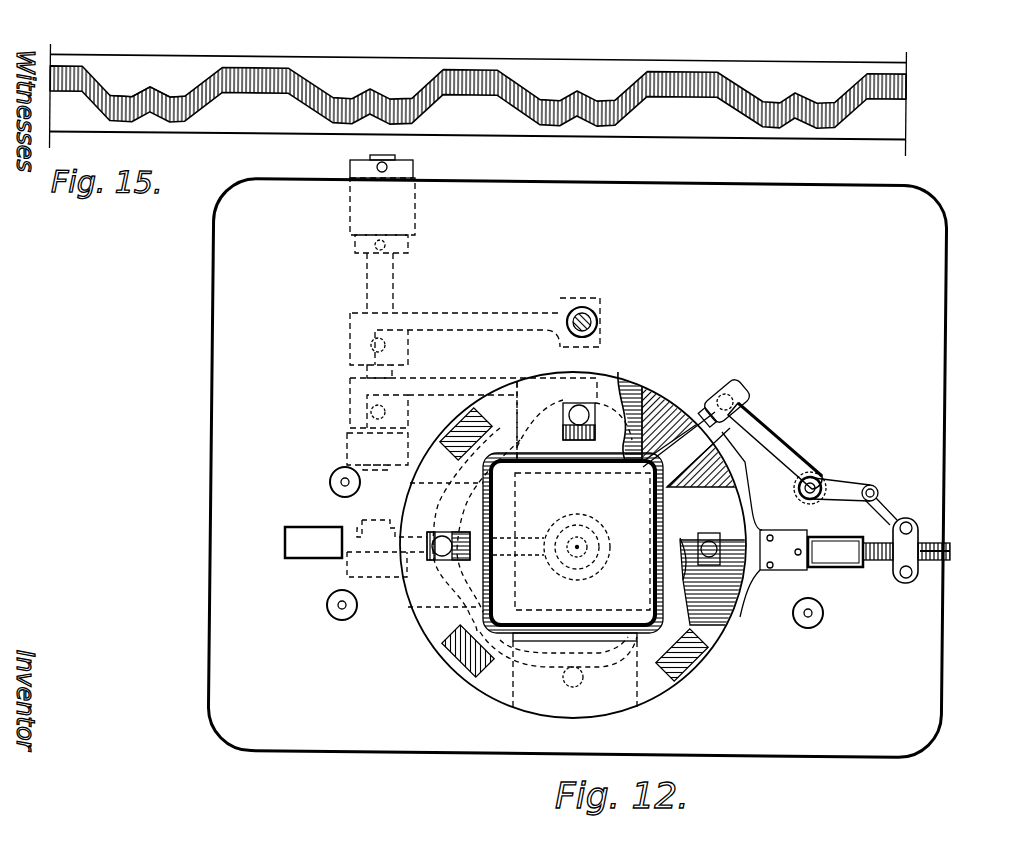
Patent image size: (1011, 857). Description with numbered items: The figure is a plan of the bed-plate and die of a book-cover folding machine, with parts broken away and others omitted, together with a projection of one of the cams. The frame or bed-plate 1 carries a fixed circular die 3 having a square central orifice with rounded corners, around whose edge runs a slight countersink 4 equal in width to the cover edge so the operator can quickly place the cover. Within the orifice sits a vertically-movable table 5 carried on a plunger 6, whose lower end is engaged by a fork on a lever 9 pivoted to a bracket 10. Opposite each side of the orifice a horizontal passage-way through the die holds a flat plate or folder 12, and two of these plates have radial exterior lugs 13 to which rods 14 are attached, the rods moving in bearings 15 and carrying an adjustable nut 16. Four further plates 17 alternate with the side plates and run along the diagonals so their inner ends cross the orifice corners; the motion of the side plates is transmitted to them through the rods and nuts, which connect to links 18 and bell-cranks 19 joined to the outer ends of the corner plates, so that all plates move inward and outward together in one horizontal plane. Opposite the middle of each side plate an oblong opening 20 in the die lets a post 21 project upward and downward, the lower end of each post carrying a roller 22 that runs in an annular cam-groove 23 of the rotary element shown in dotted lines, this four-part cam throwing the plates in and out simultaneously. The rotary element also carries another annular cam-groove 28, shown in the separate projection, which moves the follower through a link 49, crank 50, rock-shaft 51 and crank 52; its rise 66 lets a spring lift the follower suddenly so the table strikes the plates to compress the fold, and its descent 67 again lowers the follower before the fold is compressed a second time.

In FIG. 12, the frame or bed-plate 1 is at (577, 468).
In FIG. 12, the circular die 3 is at (440, 630).
In FIG. 12, the countersink 4 is at (495, 593).
In FIG. 12, the table 5 is at (582, 542).
In FIG. 12, the plunger 6 is at (587, 553).
In FIG. 12, the lever 9 is at (512, 541).
In FIG. 12, the bracket 10 is at (388, 573).
In FIG. 12, the flat plate or folder 12 is at (630, 395).
In FIG. 12, the radial exterior lug 13 is at (772, 543).
In FIG. 12, the rod 14 is at (950, 553).
In FIG. 12, the bearing 15 is at (574, 547).
In FIG. 12, the adjustable nut 16 is at (909, 583).
In FIG. 12, the plate 17 is at (723, 430).
In FIG. 12, the link 18 is at (893, 517).
In FIG. 12, the bell-crank 19 is at (840, 485).
In FIG. 12, the oblong opening 20 is at (463, 563).
In FIG. 12, the post 21 is at (427, 532).
In FIG. 12, the roller 22 is at (578, 697).
In FIG. 12, the annular cam-groove 23 is at (647, 660).
In FIG. 15, the annular cam-groove 28 is at (313, 114).
In FIG. 12, the link 49 is at (598, 318).
In FIG. 12, the crank 50 is at (580, 300).
In FIG. 12, the rock-shaft 51 is at (372, 280).
In FIG. 12, the crank 52 is at (480, 382).
In FIG. 15, the rise 66 is at (137, 95).
In FIG. 15, the descent 67 is at (177, 96).